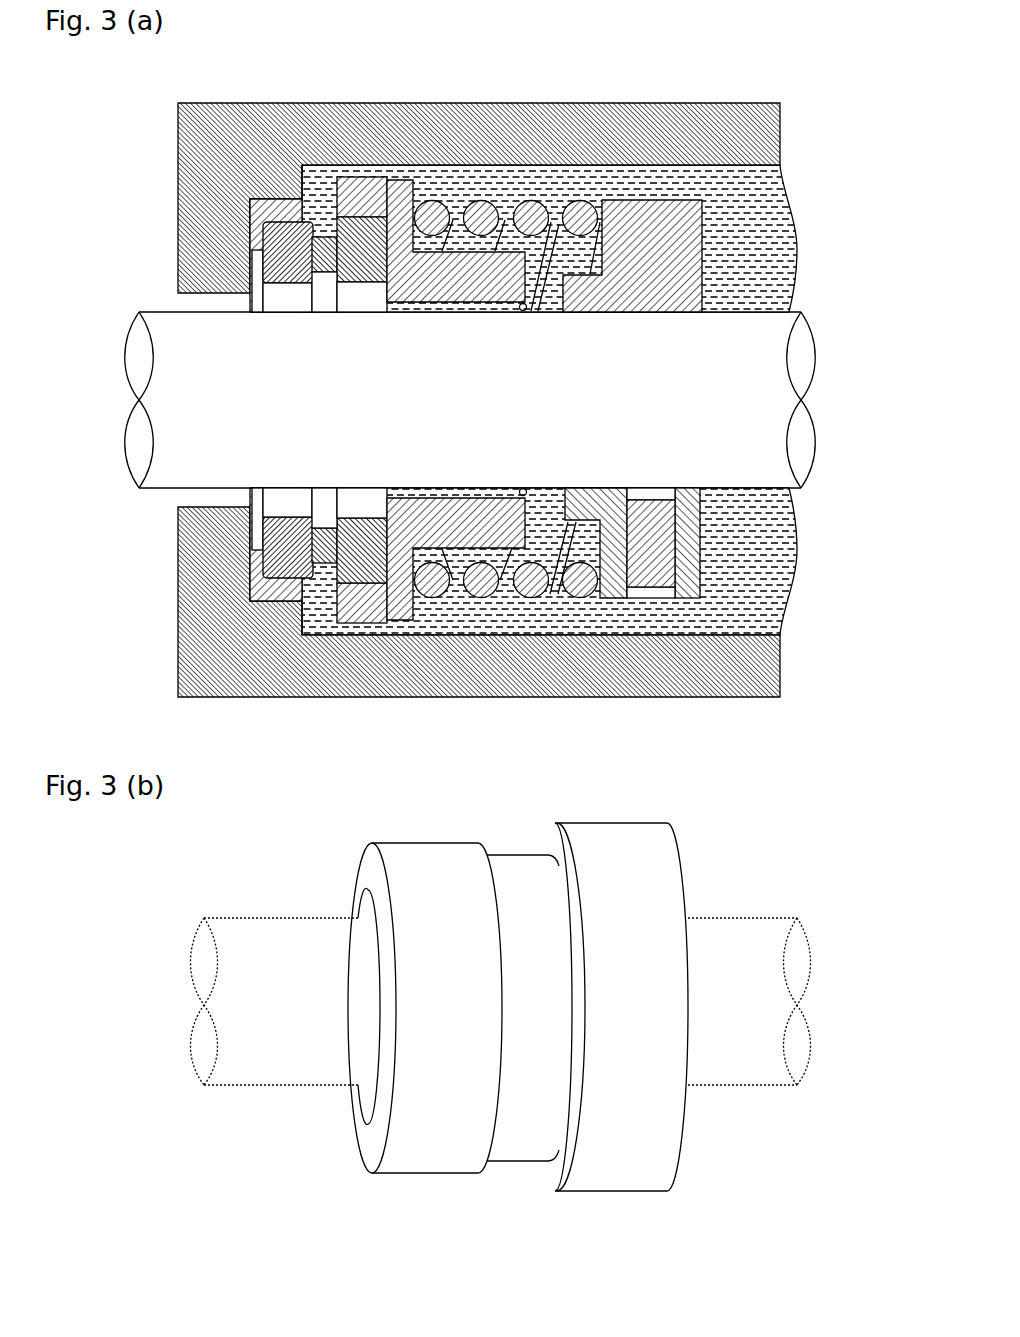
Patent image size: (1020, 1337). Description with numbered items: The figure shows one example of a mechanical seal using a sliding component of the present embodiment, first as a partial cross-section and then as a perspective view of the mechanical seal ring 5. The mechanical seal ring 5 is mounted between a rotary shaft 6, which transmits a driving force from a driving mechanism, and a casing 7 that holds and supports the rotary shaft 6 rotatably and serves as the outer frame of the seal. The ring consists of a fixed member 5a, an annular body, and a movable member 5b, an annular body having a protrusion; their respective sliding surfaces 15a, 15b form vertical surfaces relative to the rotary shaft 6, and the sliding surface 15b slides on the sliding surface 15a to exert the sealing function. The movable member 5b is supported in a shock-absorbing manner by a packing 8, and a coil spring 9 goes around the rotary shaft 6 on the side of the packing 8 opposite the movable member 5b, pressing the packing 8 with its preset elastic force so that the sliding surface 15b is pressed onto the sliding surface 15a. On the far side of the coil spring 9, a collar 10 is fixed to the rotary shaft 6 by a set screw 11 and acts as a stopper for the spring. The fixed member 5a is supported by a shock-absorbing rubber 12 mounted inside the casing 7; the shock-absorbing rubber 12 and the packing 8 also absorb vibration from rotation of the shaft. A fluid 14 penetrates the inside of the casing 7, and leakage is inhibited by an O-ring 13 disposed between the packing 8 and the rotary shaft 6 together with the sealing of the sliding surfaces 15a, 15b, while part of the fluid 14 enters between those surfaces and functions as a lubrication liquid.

In FIG. 3a, the mechanical seal ring 5 is at (293, 55).
In FIG. 3b, the mechanical seal ring 5 is at (672, 803).
In FIG. 3a, the fixed member 5a is at (287, 268).
In FIG. 3b, the fixed member 5a is at (413, 863).
In FIG. 3a, the movable member 5b is at (368, 220).
In FIG. 3b, the movable member 5b is at (603, 863).
In FIG. 3a, the rotary shaft 6 is at (180, 352).
In FIG. 3b, the rotary shaft 6 is at (323, 940).
In FIG. 3a, the casing 7 is at (203, 183).
In FIG. 3a, the packing 8 is at (405, 205).
In FIG. 3a, the coil spring 9 is at (532, 213).
In FIG. 3a, the collar 10 is at (685, 258).
In FIG. 3a, the set screw 11 is at (667, 570).
In FIG. 3a, the shock-absorbing rubber 12 is at (270, 207).
In FIG. 3a, the O-ring 13 is at (526, 311).
In FIG. 3a, the fluid 14 is at (757, 267).
In FIG. 3a, the sliding surface 15a is at (313, 520).
In FIG. 3b, the sliding surface 15a is at (493, 877).
In FIG. 3a, the sliding surface 15b is at (308, 262).
In FIG. 3b, the sliding surface 15b is at (492, 1138).